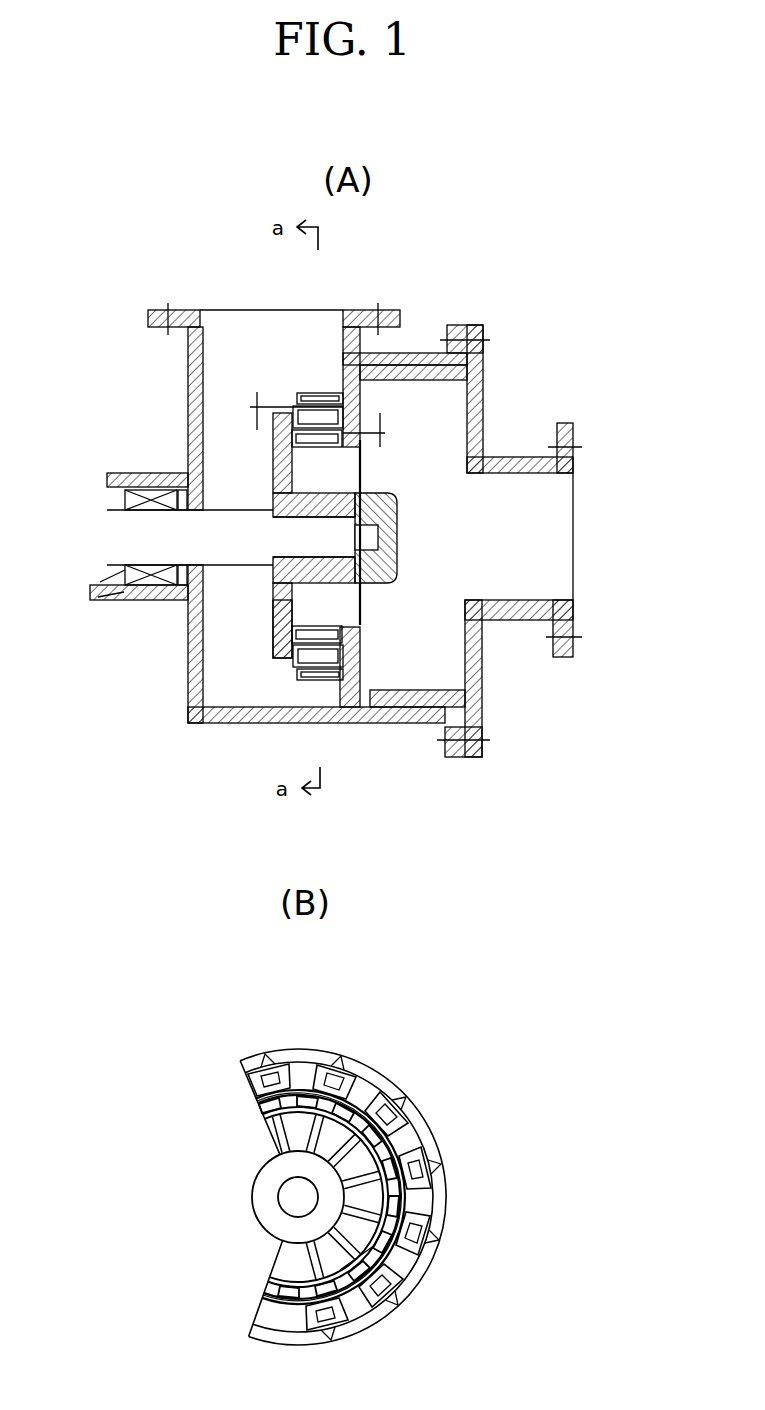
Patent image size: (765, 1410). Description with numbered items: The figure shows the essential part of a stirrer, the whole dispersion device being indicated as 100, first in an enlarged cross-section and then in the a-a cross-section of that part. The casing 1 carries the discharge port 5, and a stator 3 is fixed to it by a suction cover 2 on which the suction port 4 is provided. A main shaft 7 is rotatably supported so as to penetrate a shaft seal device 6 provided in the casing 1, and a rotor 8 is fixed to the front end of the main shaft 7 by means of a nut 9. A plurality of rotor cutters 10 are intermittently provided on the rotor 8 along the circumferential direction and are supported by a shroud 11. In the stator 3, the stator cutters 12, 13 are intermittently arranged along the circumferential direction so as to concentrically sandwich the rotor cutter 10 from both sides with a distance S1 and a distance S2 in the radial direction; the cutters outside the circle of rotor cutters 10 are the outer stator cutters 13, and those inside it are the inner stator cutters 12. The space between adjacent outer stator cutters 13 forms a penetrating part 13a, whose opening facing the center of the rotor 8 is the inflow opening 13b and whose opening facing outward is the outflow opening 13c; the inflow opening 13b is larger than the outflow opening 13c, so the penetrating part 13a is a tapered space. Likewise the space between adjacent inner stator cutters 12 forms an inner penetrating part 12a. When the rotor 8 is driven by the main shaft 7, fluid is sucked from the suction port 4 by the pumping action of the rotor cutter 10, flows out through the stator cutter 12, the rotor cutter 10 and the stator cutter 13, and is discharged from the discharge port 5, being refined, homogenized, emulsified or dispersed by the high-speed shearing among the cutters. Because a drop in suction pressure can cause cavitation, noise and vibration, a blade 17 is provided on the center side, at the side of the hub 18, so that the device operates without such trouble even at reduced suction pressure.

The rotary electric machine 100 is at (363, 290).
The casing 1 is at (327, 723).
The suction cover 2 is at (480, 678).
The stator 3 is at (373, 727).
The suction port 4 is at (573, 490).
The discharge port 5 is at (313, 307).
The shaft seal device 6 is at (143, 585).
The main shaft 7 is at (120, 578).
The rotor 8 is at (265, 638).
The nut 9 is at (400, 563).
The rotor cutter 10 is at (302, 415).
The shroud 11 is at (273, 472).
The inner stator cutter 12 is at (303, 440).
The inner penetrating part 12a is at (420, 1217).
The outer stator cutter 13 is at (317, 392).
The penetrating part 13a is at (438, 1192).
The inflow opening 13b is at (440, 1160).
The outflow opening 13c is at (440, 1193).
The blade 17 is at (360, 603).
The hub 18 is at (350, 497).
The distance S1 is at (376, 430).
The distance S2 is at (287, 411).